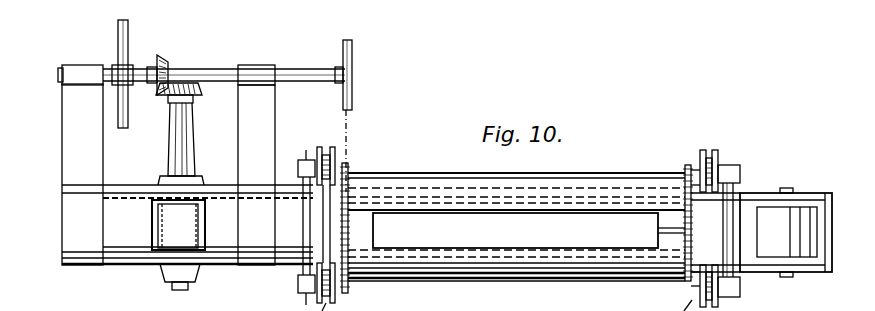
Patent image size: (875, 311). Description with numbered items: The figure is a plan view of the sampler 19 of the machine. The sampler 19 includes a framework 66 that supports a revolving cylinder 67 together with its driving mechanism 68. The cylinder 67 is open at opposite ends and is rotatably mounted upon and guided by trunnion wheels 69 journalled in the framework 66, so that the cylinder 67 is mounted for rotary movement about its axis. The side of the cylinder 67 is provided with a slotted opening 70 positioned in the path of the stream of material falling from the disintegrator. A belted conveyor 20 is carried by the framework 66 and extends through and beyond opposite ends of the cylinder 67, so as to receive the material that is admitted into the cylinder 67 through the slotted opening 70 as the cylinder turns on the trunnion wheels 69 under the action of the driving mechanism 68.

The sampler 19 is at (622, 180).
The belted conveyor 20 is at (752, 243).
The framework 66 is at (272, 124).
The revolving cylinder 67 is at (424, 180).
The driving mechanism 68 is at (305, 76).
The trunnion wheels 69 is at (323, 152).
The slotted opening 70 is at (515, 230).